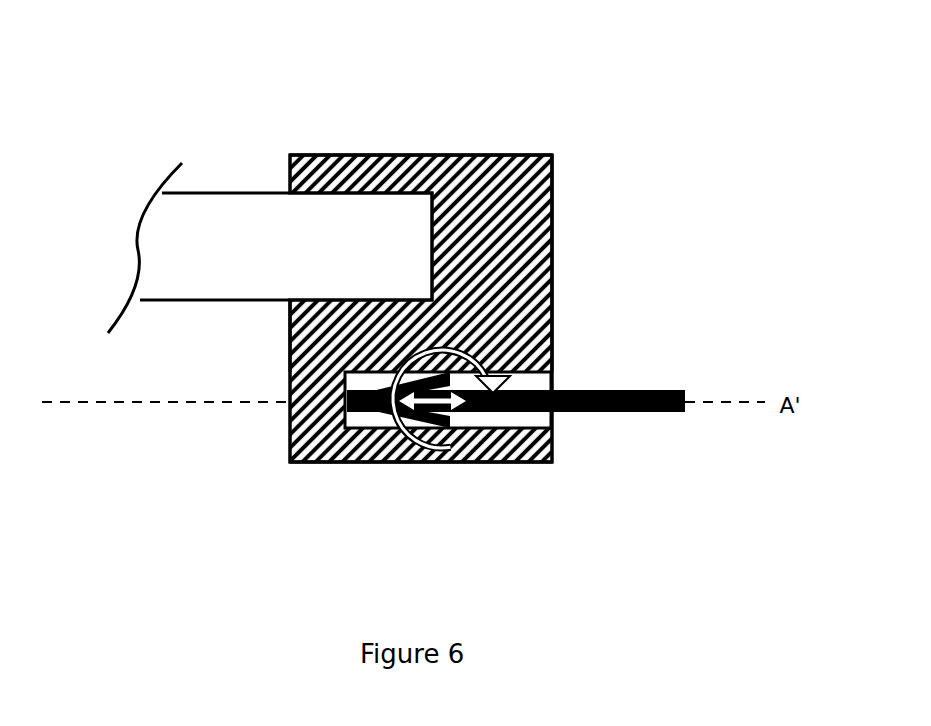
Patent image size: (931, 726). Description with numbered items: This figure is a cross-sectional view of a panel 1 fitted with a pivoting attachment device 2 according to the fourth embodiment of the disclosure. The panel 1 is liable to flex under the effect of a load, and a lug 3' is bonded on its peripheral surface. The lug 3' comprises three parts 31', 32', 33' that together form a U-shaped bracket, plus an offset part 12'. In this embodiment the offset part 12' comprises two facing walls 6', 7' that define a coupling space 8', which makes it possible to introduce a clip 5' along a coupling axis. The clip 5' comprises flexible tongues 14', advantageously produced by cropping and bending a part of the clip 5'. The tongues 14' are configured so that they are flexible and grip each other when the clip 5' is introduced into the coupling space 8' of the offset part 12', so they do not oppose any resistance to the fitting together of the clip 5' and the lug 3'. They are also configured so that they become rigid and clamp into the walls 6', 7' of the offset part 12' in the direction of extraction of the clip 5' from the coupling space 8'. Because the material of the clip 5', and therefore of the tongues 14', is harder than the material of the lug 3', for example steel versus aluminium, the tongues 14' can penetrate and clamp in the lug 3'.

The panel 1 is at (197, 203).
The pivoting attachment device 2 is at (690, 297).
The lug 3' is at (352, 308).
The first part of the lug 31' is at (421, 94).
The second part of the lug 32' is at (240, 336).
The third part of the lug 33' is at (545, 227).
The clip 5' is at (516, 456).
The wall 6' is at (568, 467).
The wall 7' is at (568, 268).
The coupling space 8' is at (439, 466).
The offset part 12' is at (399, 511).
The flexible tongues 14' is at (448, 489).